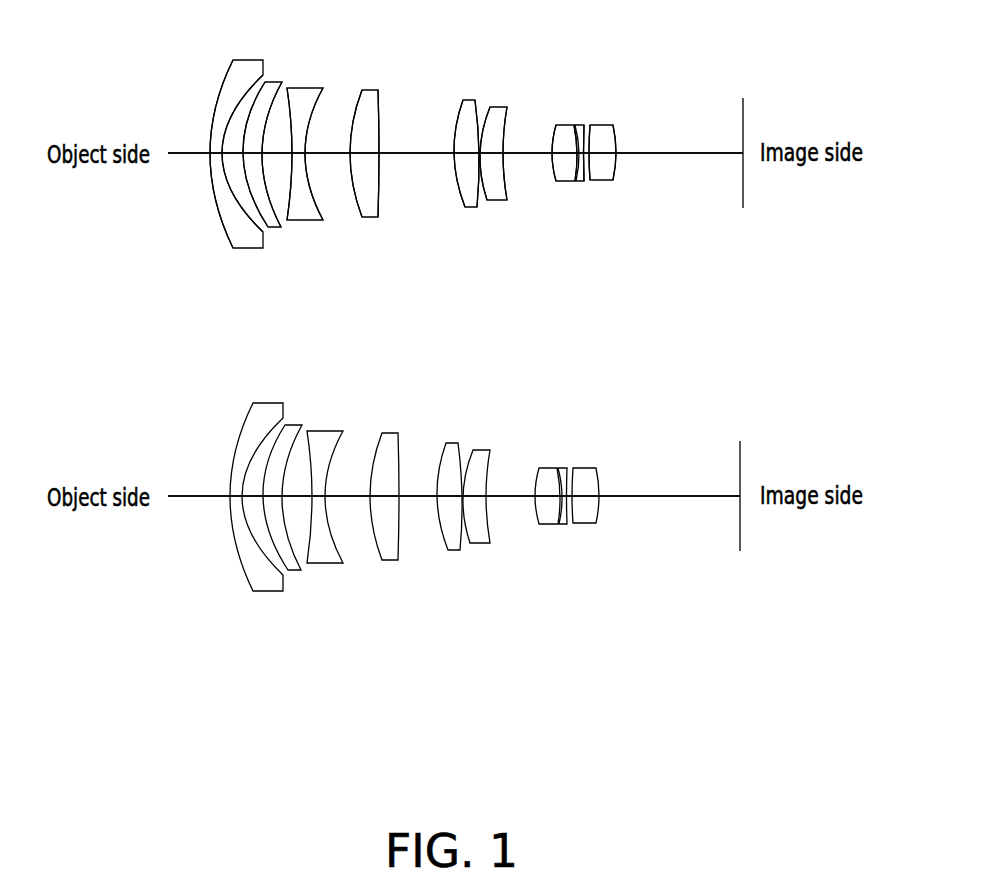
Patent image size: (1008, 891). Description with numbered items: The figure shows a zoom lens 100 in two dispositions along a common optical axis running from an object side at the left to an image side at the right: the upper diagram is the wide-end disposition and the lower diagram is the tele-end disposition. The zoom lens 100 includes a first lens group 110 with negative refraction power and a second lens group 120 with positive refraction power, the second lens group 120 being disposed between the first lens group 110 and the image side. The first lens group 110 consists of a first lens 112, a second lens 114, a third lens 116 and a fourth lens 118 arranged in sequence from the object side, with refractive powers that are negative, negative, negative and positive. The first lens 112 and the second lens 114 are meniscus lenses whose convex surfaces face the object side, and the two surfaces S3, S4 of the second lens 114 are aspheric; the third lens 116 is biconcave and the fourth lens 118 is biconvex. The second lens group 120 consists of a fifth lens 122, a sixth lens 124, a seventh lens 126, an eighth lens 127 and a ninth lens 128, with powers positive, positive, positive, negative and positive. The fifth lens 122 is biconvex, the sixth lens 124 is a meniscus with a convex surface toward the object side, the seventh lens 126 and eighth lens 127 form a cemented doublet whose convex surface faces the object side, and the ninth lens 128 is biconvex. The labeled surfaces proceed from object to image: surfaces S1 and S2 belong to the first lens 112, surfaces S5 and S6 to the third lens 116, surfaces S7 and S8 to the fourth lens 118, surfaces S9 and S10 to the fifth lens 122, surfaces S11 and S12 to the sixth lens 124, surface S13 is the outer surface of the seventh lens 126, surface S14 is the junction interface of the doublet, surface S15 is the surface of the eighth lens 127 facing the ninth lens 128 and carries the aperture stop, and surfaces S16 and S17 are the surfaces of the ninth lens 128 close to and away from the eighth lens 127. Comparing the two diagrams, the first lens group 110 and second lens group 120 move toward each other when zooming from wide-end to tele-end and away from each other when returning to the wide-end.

The zoom lens 100 is at (473, 358).
The first lens group 110 is at (372, 296).
The first lens 112 is at (245, 250).
The second lens 114 is at (272, 228).
The third lens 116 is at (303, 221).
The fourth lens 118 is at (367, 218).
The second lens group 120 is at (612, 257).
The fifth lens 122 is at (470, 208).
The sixth lens 124 is at (498, 201).
The seventh lens 126 is at (563, 182).
The eighth lens 127 is at (578, 182).
The ninth lens 128 is at (603, 181).
The surface S1 is at (211, 90).
The surface S2 is at (239, 83).
The surface S3 is at (255, 74).
The surface S4 is at (274, 76).
The surface S5 is at (295, 92).
The surface S6 is at (320, 99).
The surface S7 is at (348, 90).
The surface S8 is at (383, 104).
The surface S9 is at (443, 125).
The surface S10 is at (474, 117).
The surface S11 is at (485, 117).
The surface S12 is at (510, 121).
The surface S13 is at (545, 126).
The surface S14 is at (573, 119).
The surface S15 is at (586, 134).
The surface S16 is at (596, 152).
The surface S17 is at (623, 141).